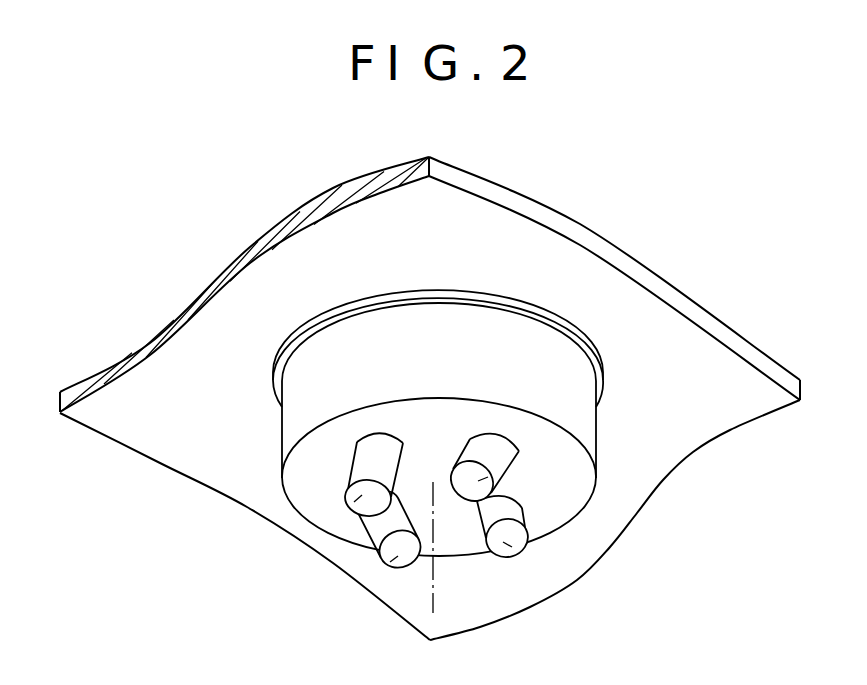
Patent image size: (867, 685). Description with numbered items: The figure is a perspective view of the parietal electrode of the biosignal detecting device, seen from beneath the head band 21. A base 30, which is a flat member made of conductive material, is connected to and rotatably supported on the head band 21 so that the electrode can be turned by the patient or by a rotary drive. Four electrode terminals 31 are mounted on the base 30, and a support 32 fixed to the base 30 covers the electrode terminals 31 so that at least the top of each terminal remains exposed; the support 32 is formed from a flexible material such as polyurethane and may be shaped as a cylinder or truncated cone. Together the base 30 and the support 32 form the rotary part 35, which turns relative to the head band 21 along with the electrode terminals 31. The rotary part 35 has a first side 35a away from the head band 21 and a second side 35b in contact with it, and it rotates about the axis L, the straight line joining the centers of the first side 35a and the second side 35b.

The head band 21 is at (470, 212).
The base 30 is at (557, 320).
The electrode terminals 31 is at (387, 565).
The support 32 is at (567, 393).
The rotary part 35 is at (494, 378).
The first side 35a is at (320, 487).
The second side 35b is at (382, 323).
The axis L is at (433, 598).